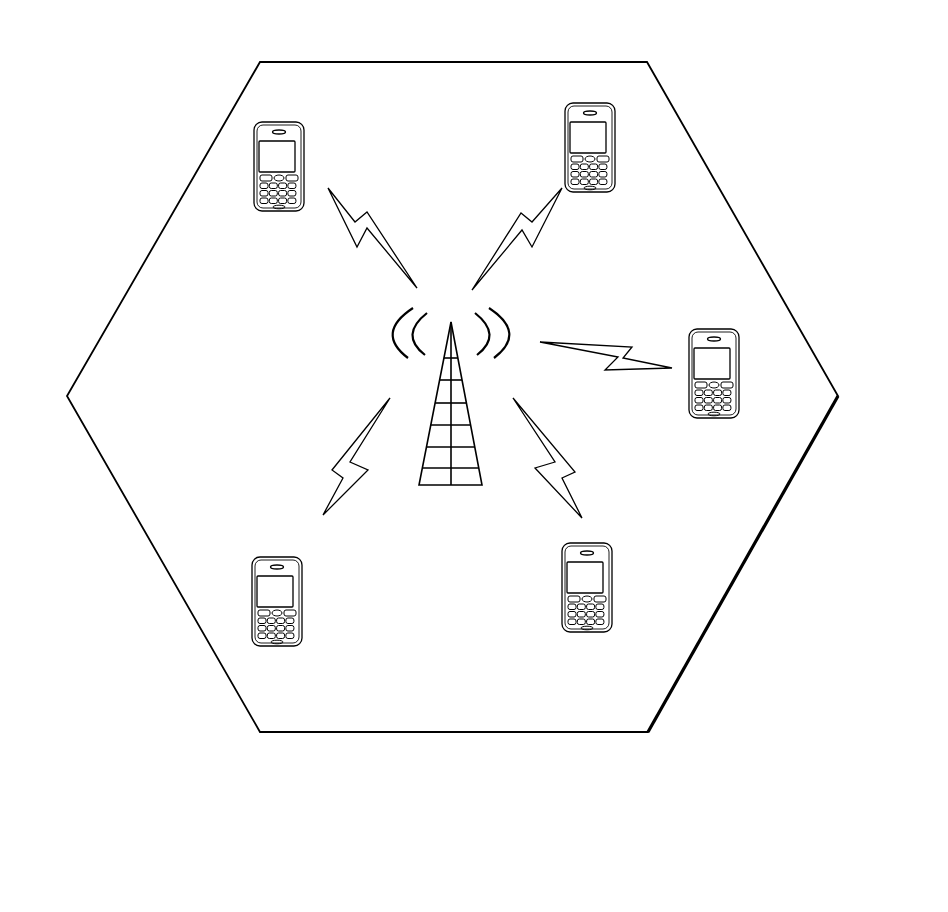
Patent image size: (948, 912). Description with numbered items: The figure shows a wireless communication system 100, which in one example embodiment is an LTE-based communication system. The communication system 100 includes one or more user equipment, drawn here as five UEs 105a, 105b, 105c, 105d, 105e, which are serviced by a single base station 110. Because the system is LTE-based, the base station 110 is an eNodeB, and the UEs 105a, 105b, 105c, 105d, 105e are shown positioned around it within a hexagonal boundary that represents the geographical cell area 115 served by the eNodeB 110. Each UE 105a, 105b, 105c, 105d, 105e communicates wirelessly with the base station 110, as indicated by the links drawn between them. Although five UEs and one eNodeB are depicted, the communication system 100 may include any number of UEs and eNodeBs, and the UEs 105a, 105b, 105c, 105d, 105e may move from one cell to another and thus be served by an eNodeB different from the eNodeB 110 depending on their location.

The communication system 100 is at (840, 112).
The user equipment 105a is at (605, 191).
The user equipment 105b is at (735, 415).
The user equipment 105c is at (610, 631).
The user equipment 105d is at (300, 645).
The user equipment 105e is at (300, 209).
The base station 110 is at (460, 487).
The geographical cell area 115 is at (749, 559).